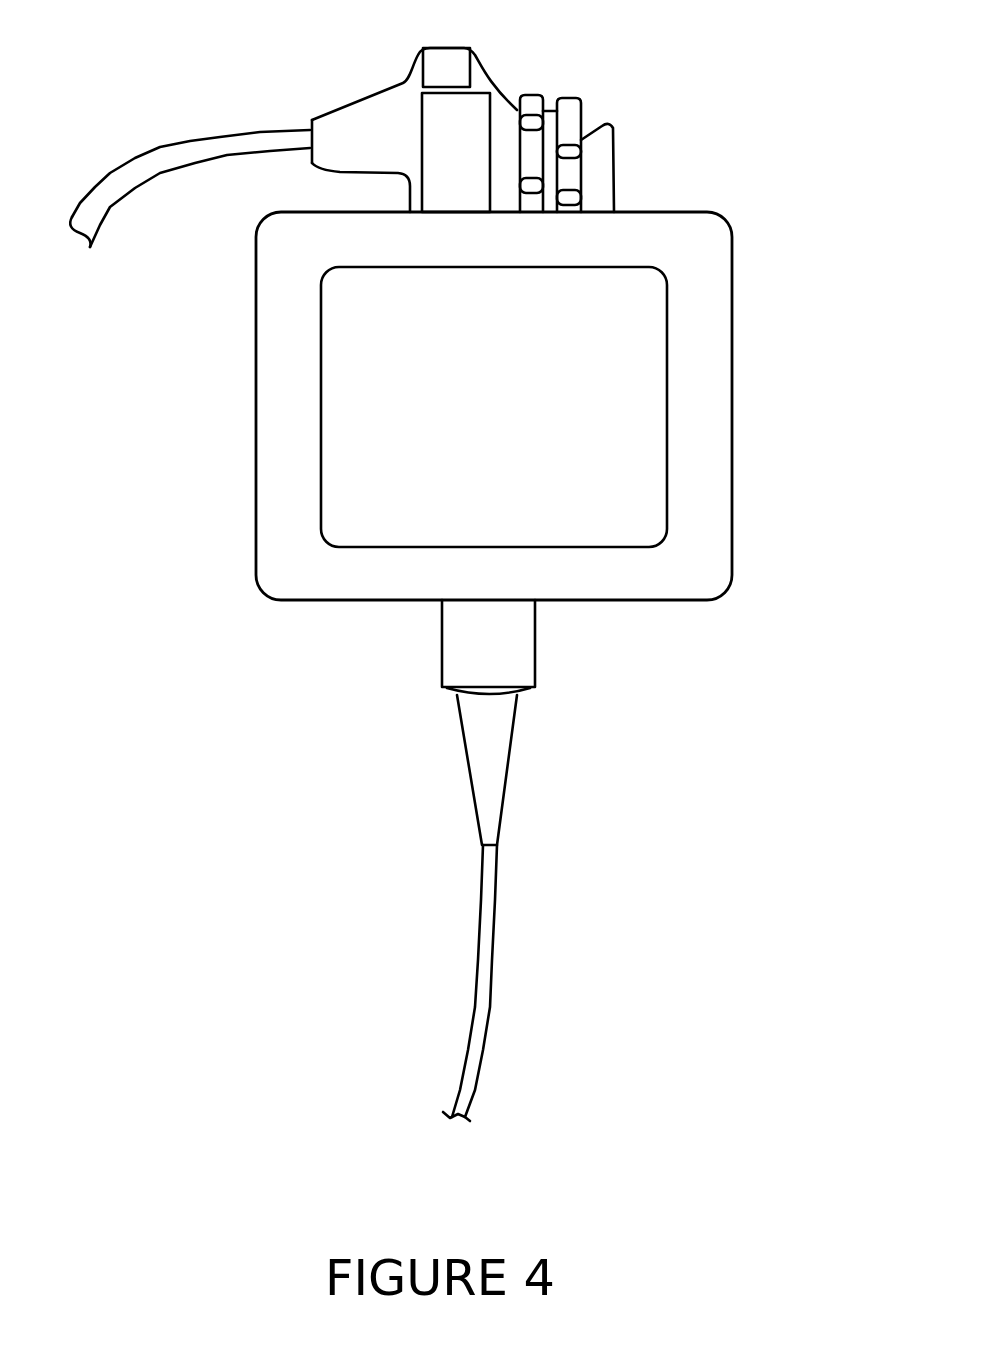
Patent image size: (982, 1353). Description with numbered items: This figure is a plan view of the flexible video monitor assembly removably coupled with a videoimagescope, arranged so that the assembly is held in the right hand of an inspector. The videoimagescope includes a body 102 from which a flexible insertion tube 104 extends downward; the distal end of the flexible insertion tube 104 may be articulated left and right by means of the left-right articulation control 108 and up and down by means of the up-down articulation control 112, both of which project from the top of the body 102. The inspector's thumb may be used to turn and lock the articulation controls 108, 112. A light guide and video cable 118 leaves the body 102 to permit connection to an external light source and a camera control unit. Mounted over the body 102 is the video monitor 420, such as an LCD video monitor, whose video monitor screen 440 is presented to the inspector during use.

The body 102 is at (525, 657).
The flexible insertion tube 104 is at (492, 955).
The left-right articulation control 108 is at (580, 98).
The up-down articulation control 112 is at (526, 95).
The light guide and video cable 118 is at (220, 140).
The video monitor 420 is at (732, 408).
The video monitor screen 440 is at (494, 407).